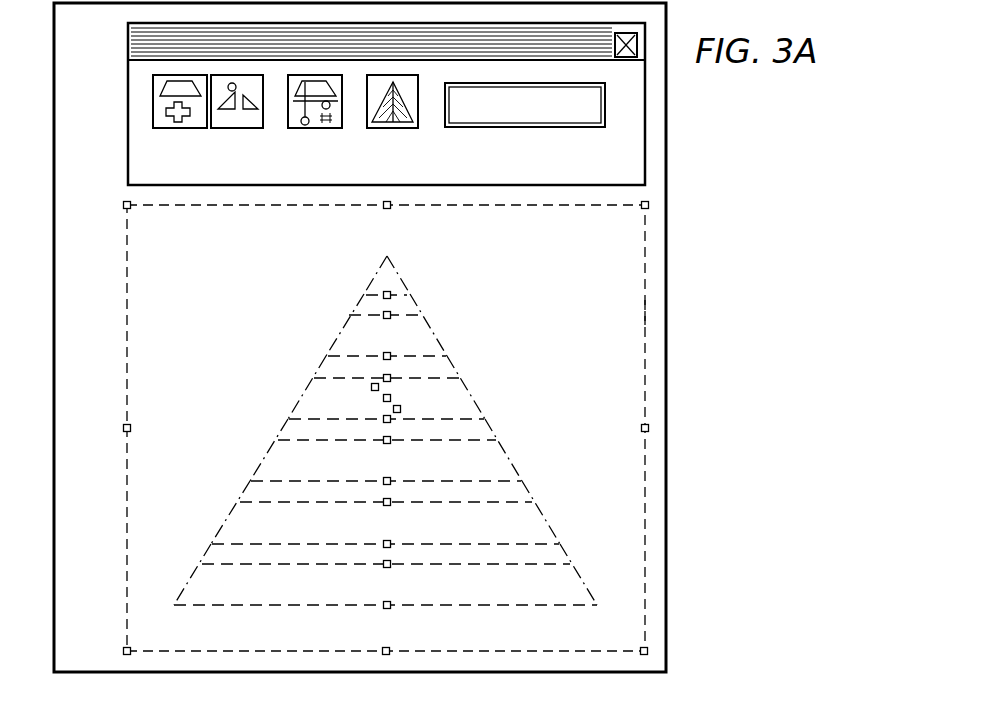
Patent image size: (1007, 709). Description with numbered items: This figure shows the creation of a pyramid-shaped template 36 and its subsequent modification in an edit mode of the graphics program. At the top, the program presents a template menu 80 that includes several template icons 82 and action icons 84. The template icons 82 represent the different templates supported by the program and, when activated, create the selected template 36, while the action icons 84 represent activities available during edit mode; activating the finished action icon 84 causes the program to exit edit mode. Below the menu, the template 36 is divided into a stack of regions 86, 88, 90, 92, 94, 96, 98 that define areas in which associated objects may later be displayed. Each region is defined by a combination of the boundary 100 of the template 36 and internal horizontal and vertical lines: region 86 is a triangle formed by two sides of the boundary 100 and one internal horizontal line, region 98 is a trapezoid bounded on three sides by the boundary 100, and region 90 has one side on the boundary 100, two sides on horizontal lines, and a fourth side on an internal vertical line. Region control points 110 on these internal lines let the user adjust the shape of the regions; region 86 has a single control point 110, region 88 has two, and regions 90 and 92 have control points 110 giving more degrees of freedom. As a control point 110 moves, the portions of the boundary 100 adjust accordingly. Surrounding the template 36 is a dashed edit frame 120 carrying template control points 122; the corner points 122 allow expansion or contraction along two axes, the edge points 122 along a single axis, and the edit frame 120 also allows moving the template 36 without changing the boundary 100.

The template 36 is at (649, 312).
The template menu 80 is at (750, 148).
The template icons 82 is at (420, 137).
The action icons 84 is at (561, 128).
The region 86 is at (402, 276).
The region 88 is at (428, 320).
The region 90 is at (298, 399).
The region 92 is at (479, 404).
The region 94 is at (511, 459).
The region 96 is at (550, 523).
The region 98 is at (586, 584).
The boundary 100 is at (357, 310).
The region control points 110 is at (382, 292).
The edit frame 120 is at (127, 293).
The template control points 122 is at (123, 205).